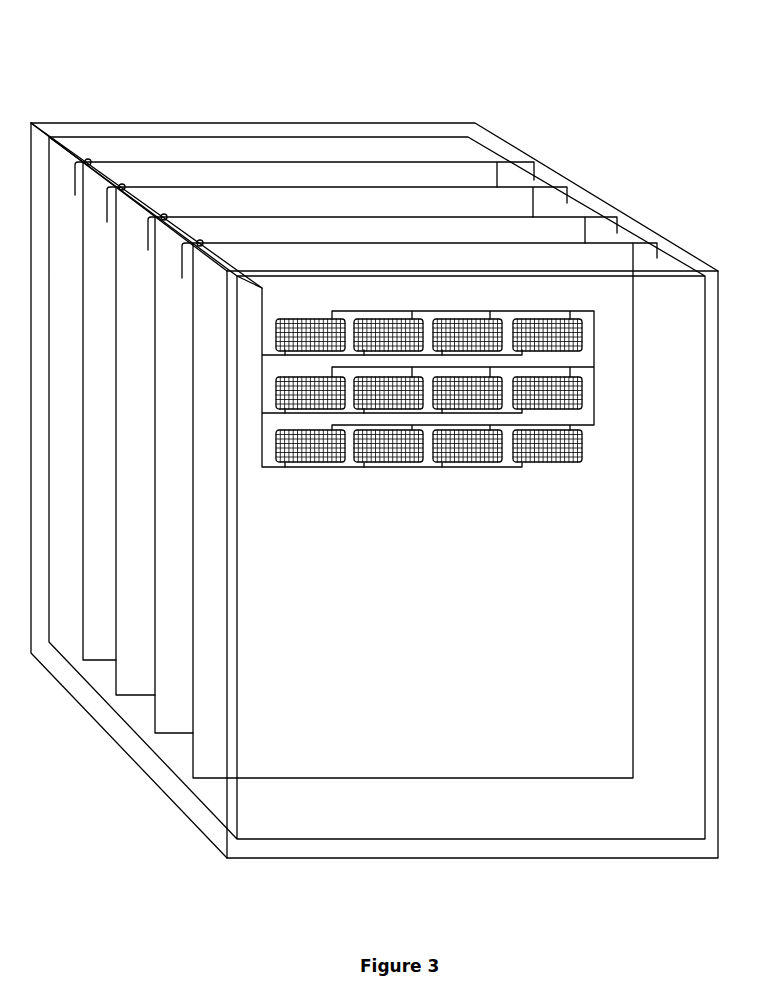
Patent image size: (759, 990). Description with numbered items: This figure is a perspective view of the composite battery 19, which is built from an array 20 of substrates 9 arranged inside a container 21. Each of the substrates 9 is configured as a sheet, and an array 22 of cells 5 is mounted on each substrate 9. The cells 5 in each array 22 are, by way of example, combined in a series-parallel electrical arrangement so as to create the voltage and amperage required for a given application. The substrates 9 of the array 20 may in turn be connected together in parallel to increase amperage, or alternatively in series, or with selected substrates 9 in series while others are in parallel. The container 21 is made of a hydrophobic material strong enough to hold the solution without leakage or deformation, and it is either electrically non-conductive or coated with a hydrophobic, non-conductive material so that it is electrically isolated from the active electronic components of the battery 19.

The composite battery 19 is at (374, 464).
The cell 5 is at (547, 320).
The array of cells 22 is at (469, 328).
The array of substrates 20 is at (53, 700).
The substrate 9 is at (347, 778).
The container 21 is at (522, 858).